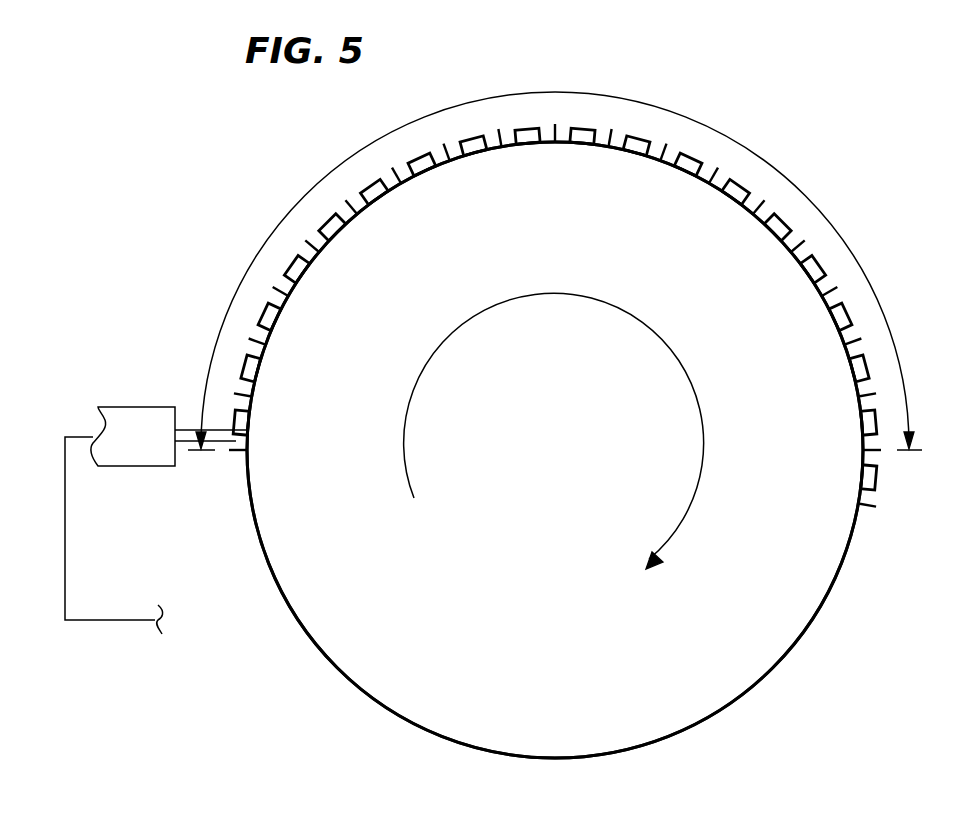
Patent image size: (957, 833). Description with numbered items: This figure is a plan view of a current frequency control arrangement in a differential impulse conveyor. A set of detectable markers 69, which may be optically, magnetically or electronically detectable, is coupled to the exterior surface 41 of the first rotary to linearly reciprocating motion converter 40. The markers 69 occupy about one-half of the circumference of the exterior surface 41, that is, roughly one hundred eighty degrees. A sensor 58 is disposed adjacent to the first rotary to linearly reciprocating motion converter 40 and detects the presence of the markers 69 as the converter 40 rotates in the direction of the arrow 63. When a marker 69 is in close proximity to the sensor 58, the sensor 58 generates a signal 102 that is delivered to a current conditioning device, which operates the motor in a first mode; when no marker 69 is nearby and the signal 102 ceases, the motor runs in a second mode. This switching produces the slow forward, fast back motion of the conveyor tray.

The first rotary to linearly reciprocating motion converter 40 is at (813, 623).
The exterior surface 41 is at (740, 698).
The sensor 58 is at (139, 405).
The arrow 63 is at (553, 298).
The detectable markers 69 is at (787, 221).
The signal 102 is at (65, 493).